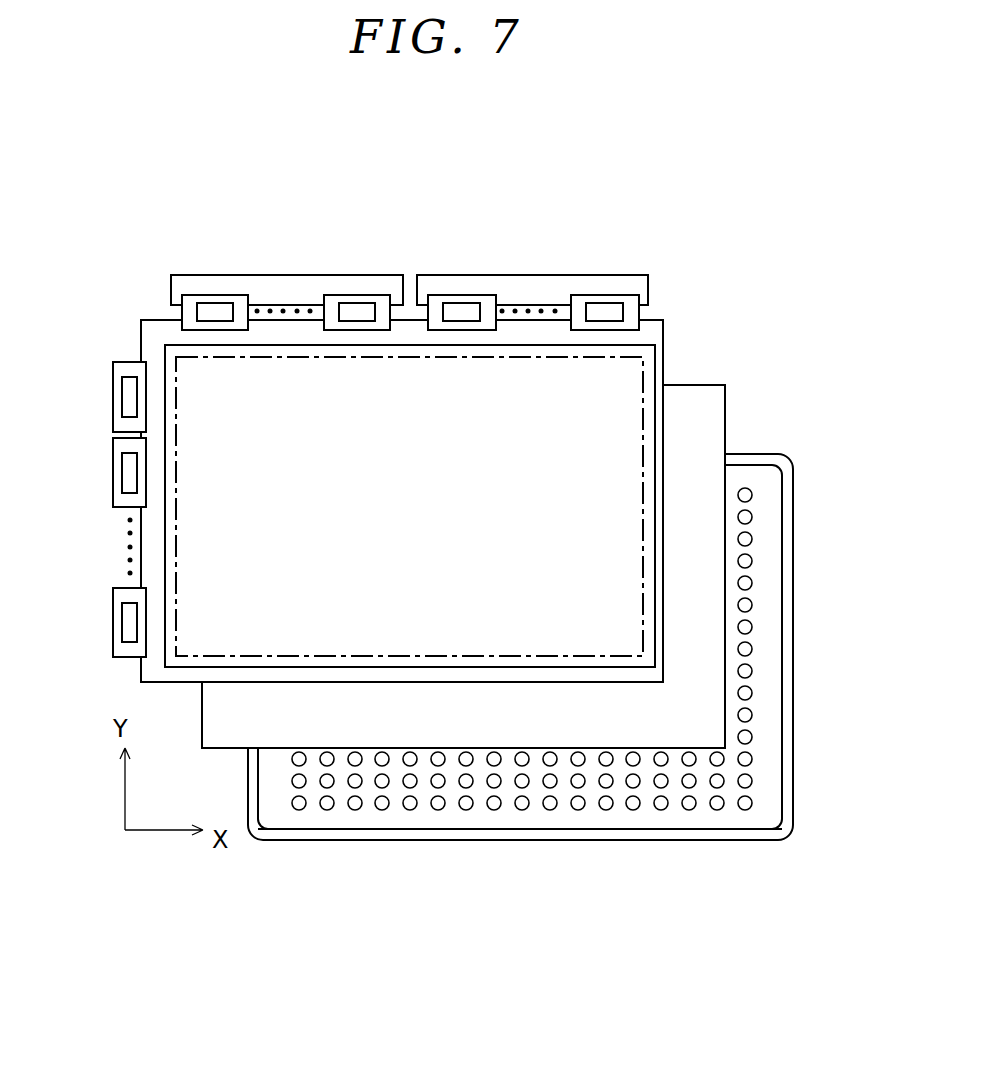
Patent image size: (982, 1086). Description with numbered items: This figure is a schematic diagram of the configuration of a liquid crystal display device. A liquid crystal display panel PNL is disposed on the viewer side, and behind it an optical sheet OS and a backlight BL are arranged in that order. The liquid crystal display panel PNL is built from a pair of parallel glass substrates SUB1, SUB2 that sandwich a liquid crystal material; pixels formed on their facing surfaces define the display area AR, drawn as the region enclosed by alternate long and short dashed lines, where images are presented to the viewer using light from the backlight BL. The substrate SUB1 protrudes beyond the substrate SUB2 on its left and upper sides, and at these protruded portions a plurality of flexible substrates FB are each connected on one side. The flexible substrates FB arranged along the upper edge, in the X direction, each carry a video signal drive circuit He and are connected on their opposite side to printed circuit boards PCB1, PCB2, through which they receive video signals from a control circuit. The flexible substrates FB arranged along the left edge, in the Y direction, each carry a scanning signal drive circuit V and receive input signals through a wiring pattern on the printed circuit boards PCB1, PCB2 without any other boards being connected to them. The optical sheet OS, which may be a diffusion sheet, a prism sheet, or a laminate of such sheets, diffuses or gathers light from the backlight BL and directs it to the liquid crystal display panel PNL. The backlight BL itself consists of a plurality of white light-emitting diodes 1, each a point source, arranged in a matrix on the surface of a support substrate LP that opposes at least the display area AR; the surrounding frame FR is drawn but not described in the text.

The liquid crystal display panel PNL is at (575, 250).
The substrate SUB1 is at (155, 320).
The substrate SUB2 is at (163, 664).
The display area AR is at (409, 506).
The flexible substrate FB is at (205, 300).
The video signal drive circuit He is at (226, 303).
The scanning signal drive circuit V is at (120, 402).
The printed circuit board PCB1 is at (303, 275).
The printed circuit board PCB2 is at (533, 275).
The optical sheet OS is at (692, 375).
The backlight BL is at (747, 445).
The white light-emitting diode 1 is at (752, 625).
The support substrate LP is at (443, 820).
The frame FR is at (687, 840).